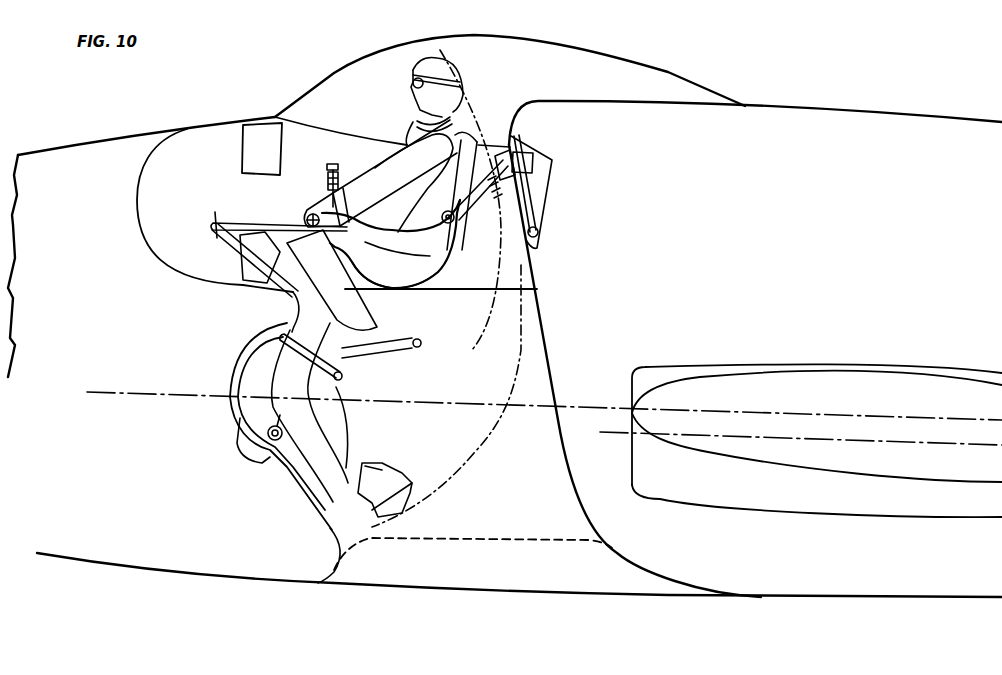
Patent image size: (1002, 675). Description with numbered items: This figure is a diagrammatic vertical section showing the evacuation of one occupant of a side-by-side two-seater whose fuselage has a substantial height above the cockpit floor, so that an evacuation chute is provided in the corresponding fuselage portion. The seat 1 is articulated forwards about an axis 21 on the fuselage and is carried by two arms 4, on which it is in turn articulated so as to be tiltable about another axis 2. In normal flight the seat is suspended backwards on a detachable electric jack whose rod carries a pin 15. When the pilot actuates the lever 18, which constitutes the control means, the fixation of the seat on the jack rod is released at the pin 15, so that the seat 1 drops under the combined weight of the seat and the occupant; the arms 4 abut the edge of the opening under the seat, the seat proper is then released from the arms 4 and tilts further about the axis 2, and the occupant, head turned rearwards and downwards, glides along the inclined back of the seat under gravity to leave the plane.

The seat 1 is at (433, 257).
The axis 2 is at (347, 257).
The arms 4 is at (252, 230).
The pin 15 is at (547, 232).
The lever 18 is at (337, 220).
The axis 21 is at (213, 227).